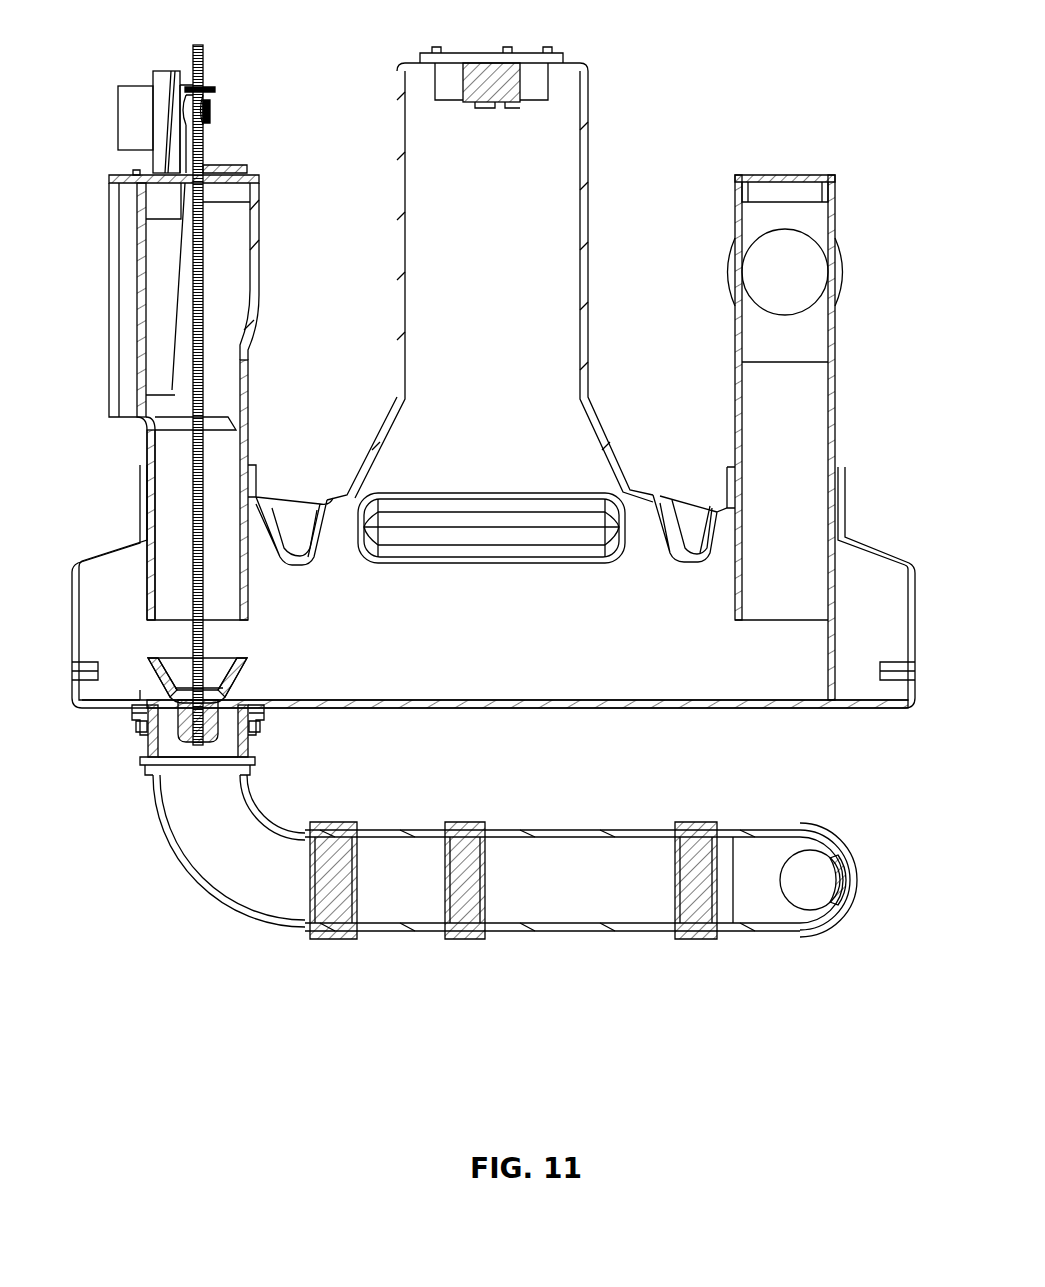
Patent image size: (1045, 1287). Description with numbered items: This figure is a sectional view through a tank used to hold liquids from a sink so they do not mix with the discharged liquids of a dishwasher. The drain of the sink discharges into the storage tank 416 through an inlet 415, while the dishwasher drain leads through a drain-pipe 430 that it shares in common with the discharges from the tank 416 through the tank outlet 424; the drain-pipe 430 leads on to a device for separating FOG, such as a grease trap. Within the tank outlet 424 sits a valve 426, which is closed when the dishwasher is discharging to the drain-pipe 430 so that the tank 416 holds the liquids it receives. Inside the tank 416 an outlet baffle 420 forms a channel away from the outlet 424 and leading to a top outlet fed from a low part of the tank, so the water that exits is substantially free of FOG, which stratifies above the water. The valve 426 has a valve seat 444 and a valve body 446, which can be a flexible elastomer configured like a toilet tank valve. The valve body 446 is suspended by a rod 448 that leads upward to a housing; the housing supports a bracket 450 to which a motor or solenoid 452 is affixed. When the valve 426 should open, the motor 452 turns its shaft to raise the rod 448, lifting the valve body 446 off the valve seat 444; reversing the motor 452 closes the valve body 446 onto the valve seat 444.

The inlet 415 is at (812, 255).
The storage tank 416 is at (875, 557).
The outlet baffle 420 is at (248, 600).
The tank outlet 424 is at (252, 718).
The valve 426 is at (138, 732).
The drain-pipe 430 is at (633, 925).
The valve seat 444 is at (140, 690).
The valve body 446 is at (162, 665).
The rod 448 is at (193, 506).
The bracket 450 is at (175, 125).
The motor or solenoid 452 is at (128, 86).